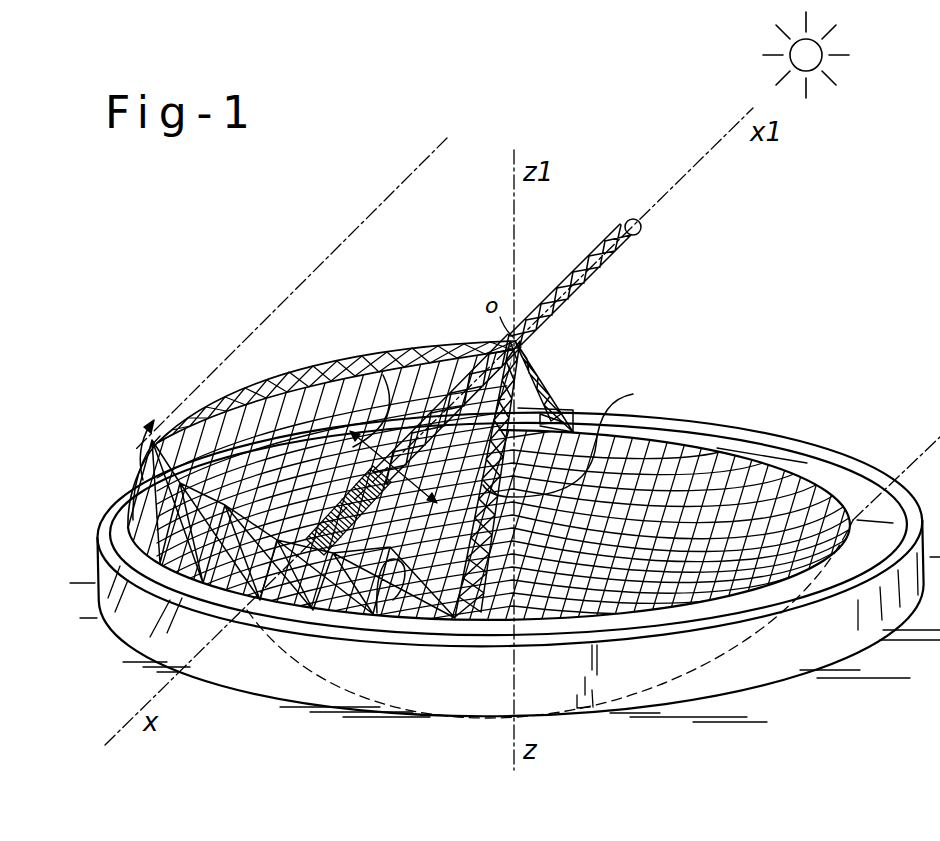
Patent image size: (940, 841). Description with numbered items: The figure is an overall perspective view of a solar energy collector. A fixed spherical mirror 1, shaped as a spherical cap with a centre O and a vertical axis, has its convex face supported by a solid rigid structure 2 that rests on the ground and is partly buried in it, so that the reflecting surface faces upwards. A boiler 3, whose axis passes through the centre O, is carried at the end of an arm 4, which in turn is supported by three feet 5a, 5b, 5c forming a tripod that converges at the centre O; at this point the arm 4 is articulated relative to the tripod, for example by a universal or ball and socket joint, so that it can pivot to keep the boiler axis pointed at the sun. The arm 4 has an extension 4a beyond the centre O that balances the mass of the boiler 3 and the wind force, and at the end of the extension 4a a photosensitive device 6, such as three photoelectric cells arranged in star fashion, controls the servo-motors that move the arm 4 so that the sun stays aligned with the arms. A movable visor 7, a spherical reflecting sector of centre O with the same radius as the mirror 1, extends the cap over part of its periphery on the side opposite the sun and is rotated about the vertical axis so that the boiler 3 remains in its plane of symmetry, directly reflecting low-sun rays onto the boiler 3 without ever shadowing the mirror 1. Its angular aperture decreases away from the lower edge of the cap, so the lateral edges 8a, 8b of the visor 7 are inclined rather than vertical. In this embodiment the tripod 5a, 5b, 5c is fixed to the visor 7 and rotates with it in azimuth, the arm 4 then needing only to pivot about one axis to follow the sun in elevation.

The fixed spherical mirror 1 is at (700, 473).
The rigid structure 2 is at (857, 490).
The boiler 3 is at (382, 375).
The arm 4 is at (449, 375).
The extension 4a is at (578, 287).
The foot 5a is at (357, 377).
The foot 5b is at (550, 365).
The foot 5c is at (576, 438).
The photosensitive device 6 is at (621, 238).
The movable visor 7 is at (278, 393).
The lateral edge 8a is at (383, 590).
The lateral edge 8b is at (556, 393).